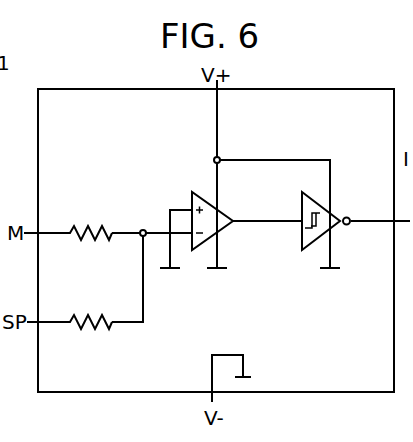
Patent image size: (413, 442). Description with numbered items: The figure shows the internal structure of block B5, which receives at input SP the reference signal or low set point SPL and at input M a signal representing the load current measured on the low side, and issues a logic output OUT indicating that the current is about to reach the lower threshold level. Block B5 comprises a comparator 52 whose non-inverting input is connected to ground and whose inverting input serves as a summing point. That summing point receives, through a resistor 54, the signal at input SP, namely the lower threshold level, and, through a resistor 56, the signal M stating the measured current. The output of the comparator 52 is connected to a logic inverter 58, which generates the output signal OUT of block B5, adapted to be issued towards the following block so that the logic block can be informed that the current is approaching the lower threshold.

The block B5 is at (381, 89).
The comparator 52 is at (190, 198).
The resistor 54 is at (87, 331).
The resistor 56 is at (77, 227).
The logic inverter 58 is at (300, 236).